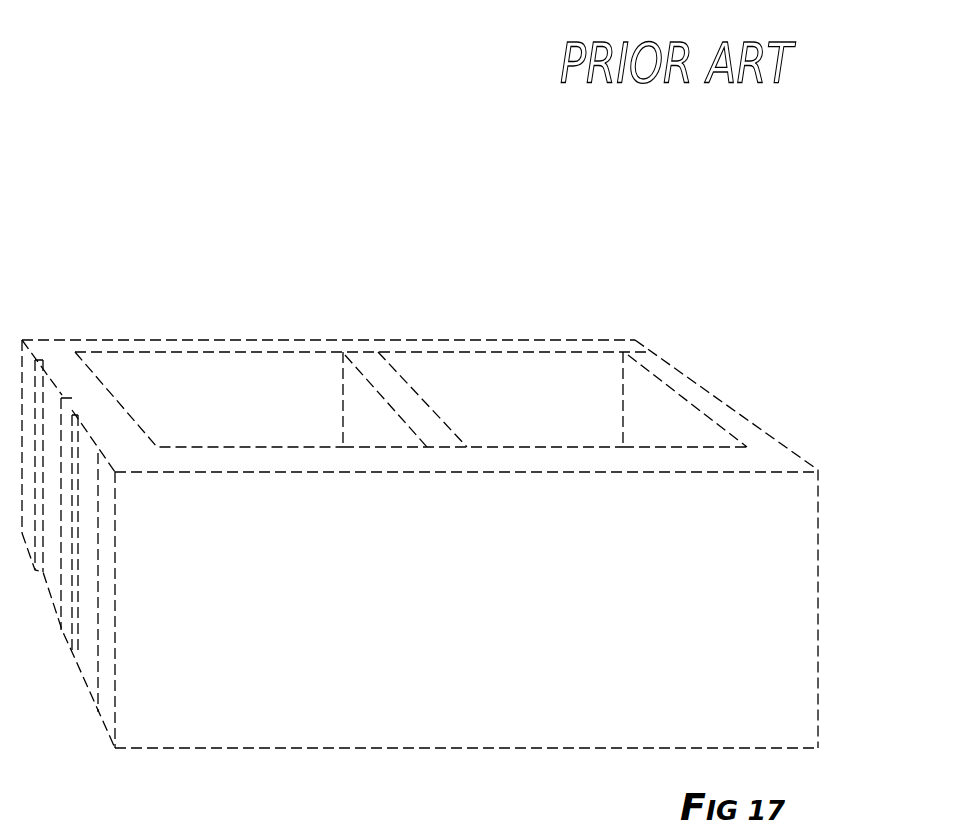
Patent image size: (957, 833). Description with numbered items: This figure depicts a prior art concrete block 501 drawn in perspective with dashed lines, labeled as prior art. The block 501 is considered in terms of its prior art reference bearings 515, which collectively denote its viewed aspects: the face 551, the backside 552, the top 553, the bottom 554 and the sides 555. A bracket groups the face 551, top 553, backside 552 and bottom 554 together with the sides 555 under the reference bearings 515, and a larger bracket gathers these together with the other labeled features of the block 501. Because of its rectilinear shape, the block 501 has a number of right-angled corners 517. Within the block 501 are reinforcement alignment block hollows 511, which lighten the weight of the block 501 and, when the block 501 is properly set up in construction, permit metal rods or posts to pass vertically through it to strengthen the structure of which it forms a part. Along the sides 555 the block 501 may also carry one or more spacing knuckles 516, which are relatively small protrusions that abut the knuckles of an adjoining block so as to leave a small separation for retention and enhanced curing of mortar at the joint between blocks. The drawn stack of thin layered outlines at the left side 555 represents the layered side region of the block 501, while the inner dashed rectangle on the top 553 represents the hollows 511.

The prior art concrete block 501 is at (672, 163).
The prior art reference bearings 515 is at (408, 212).
The reinforcement alignment block hollows 511 is at (532, 390).
The spacing knuckles 516 is at (790, 462).
The right-angled corners 517 is at (818, 470).
The face 551 is at (437, 535).
The backside 552 is at (157, 340).
The top 553 is at (275, 403).
The bottom 554 is at (515, 748).
The sides 555 is at (48, 402).